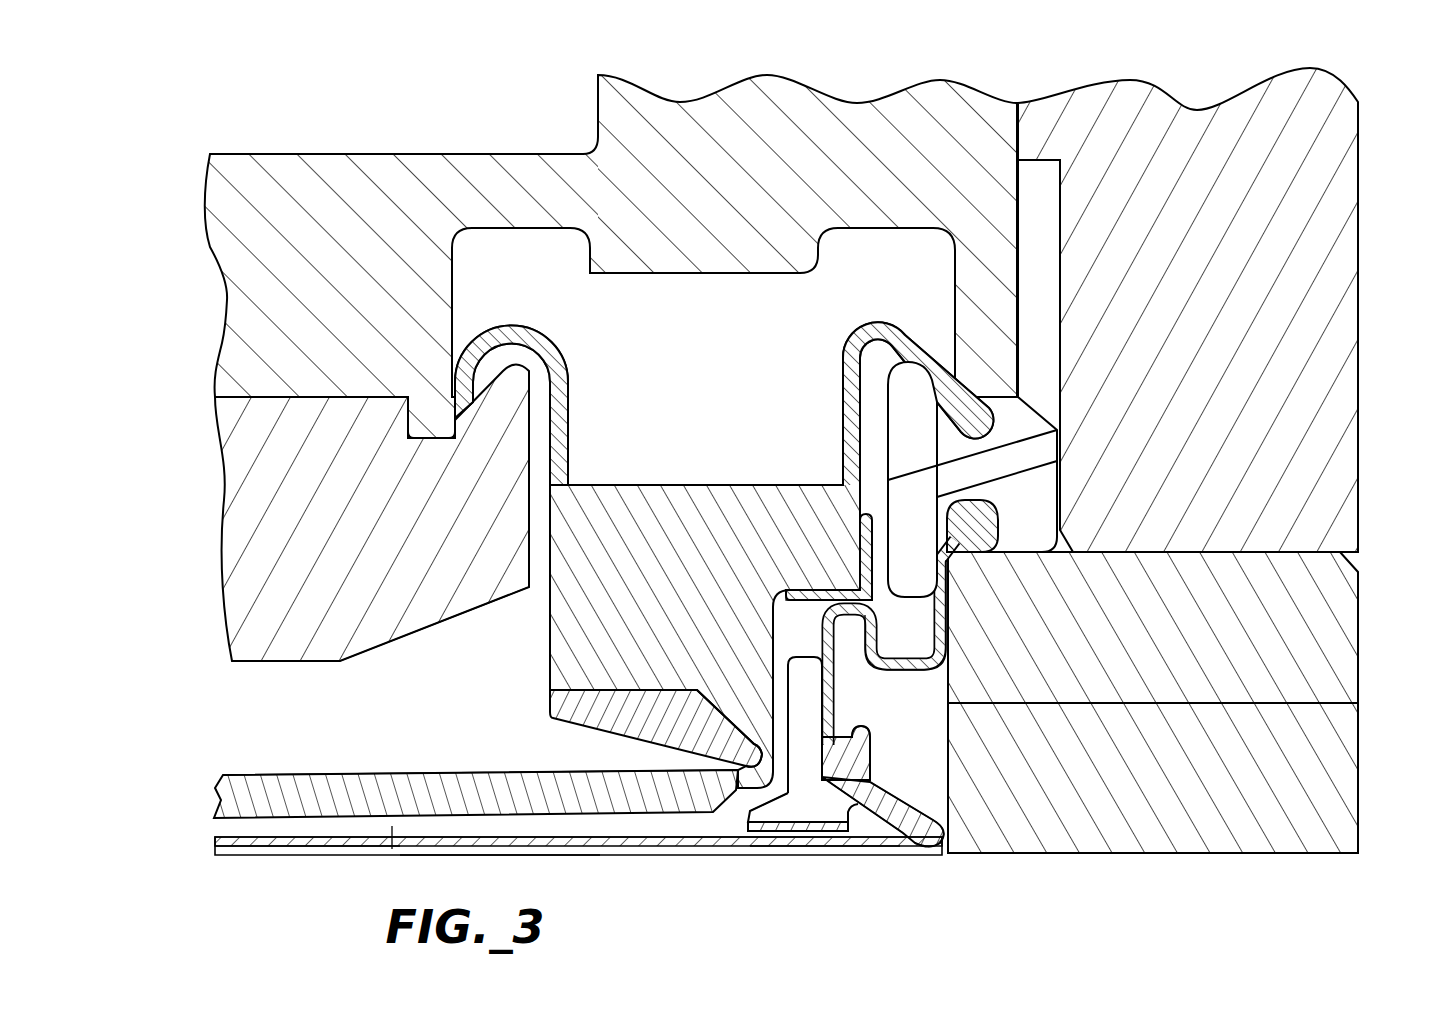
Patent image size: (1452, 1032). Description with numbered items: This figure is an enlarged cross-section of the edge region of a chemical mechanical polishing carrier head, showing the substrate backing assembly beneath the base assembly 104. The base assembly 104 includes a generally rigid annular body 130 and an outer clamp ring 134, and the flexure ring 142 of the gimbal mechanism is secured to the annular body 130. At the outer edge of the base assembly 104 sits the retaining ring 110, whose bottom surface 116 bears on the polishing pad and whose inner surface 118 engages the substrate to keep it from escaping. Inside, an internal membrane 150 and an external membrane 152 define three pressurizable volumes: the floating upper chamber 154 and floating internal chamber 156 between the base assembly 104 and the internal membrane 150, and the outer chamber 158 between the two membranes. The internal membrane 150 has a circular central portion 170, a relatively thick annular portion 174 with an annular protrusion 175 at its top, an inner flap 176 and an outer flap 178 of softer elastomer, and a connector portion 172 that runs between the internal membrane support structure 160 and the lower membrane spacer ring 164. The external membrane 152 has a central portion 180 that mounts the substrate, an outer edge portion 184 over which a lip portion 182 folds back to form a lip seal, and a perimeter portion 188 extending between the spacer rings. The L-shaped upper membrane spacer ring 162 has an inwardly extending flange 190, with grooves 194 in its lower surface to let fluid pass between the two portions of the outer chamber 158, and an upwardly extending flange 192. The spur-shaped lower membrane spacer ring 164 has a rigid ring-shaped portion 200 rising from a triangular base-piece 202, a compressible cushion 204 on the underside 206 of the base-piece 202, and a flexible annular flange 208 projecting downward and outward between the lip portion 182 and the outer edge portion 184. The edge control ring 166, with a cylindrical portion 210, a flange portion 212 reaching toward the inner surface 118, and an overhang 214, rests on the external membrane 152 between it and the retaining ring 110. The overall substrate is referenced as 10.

The glazing assembly 10 is at (485, 855).
The base assembly 104 is at (1364, 188).
The retaining ring 110 is at (1366, 778).
The bottom surface 116 is at (1150, 854).
The inner surface 118 is at (950, 822).
The annular body 130 is at (322, 154).
The outer clamp ring 134 is at (1358, 332).
The flexure ring 142 is at (302, 663).
The internal membrane 150 is at (208, 790).
The external membrane 152 is at (209, 845).
The floating upper chamber 154 is at (738, 374).
The floating internal chamber 156 is at (395, 737).
The outer chamber 158 is at (392, 850).
The internal membrane support structure 160 is at (540, 706).
The upper membrane spacer ring 162 is at (834, 572).
The lower membrane spacer ring 164 is at (738, 815).
The edge control ring 166 is at (881, 696).
The central portion 170 is at (315, 778).
The connector portion 172 is at (730, 800).
The thick portion 174 is at (550, 635).
The annular protrusion 175 is at (597, 484).
The inner flap 176 is at (577, 390).
The outer flap 178 is at (907, 325).
The central portion 180 is at (300, 847).
The lip portion 182 is at (790, 835).
The outer edge portion 184 is at (853, 845).
The perimeter portion 188 is at (873, 628).
The inwardly extending flange 190 is at (810, 588).
The upwardly extending flange 192 is at (885, 480).
The grooves 194 is at (779, 604).
The ring-shaped portion 200 is at (742, 620).
The base-piece 202 is at (815, 847).
The compressible cushion 204 is at (813, 812).
The underside 206 is at (806, 832).
The flexible annular flange 208 is at (890, 853).
The cylindrical portion 210 is at (862, 728).
The flange portion 212 is at (887, 784).
The overhang 214 is at (873, 746).